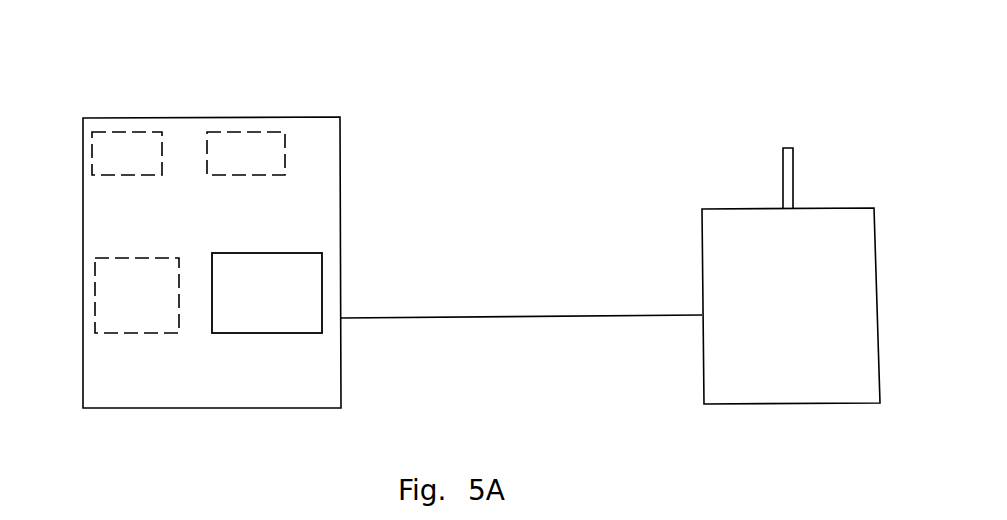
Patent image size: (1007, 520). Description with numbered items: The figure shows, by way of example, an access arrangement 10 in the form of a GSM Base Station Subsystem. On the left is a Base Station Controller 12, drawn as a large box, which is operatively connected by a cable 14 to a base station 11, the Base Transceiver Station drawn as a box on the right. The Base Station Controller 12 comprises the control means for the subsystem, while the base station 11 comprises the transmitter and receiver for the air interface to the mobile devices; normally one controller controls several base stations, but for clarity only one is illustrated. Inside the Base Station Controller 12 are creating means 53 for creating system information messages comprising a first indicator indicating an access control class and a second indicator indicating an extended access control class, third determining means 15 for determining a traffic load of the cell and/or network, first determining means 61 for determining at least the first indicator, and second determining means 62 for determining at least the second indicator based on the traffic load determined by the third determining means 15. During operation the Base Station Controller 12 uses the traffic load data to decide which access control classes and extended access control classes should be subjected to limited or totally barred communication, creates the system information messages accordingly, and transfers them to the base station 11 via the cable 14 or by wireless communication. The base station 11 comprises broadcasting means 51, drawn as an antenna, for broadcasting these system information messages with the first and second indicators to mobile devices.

The access arrangement 10 is at (667, 98).
The base station 11 is at (874, 209).
The Base Station Controller 12 is at (340, 117).
The cable 14 is at (520, 318).
The third determining means 15 is at (95, 300).
The broadcasting means 51 is at (792, 145).
The creating means 53 is at (322, 253).
The first determining means 61 is at (108, 130).
The second determining means 62 is at (260, 130).